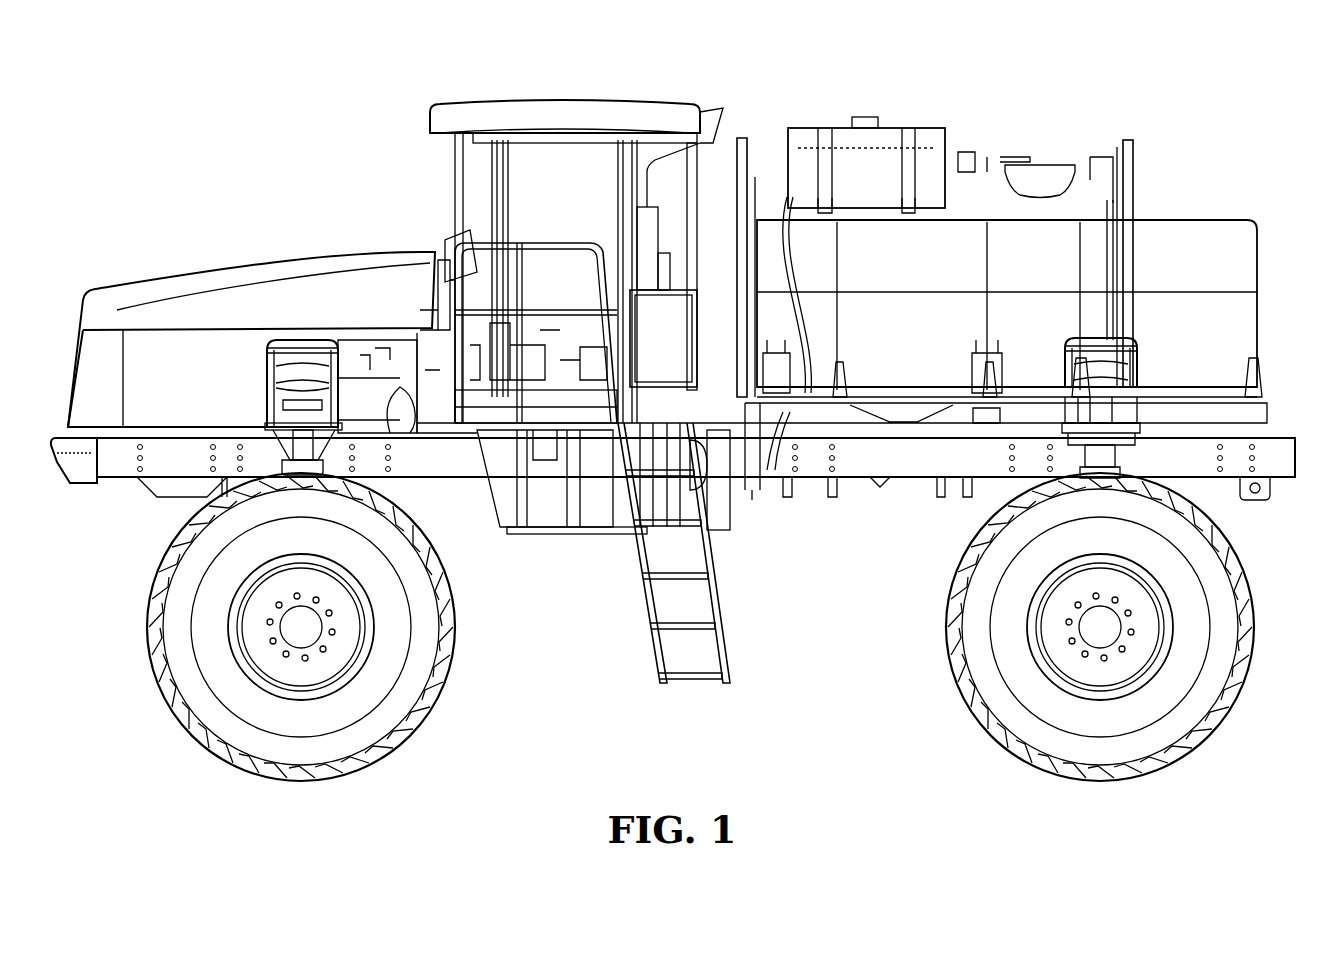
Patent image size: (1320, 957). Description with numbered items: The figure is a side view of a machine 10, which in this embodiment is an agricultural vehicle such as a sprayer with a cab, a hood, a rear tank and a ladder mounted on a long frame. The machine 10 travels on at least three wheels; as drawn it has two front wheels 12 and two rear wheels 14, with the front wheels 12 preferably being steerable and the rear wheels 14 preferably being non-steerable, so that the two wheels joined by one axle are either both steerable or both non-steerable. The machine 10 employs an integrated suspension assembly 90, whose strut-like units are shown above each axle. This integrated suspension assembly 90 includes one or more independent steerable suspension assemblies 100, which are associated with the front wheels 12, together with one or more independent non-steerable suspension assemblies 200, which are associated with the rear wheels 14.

The machine 10 is at (206, 177).
The front wheels 12 is at (177, 663).
The rear wheels 14 is at (1203, 723).
The integrated suspension assembly 90 is at (318, 343).
The independent steerable suspension assembly 100 is at (267, 377).
The independent non-steerable suspension assembly 200 is at (1137, 375).